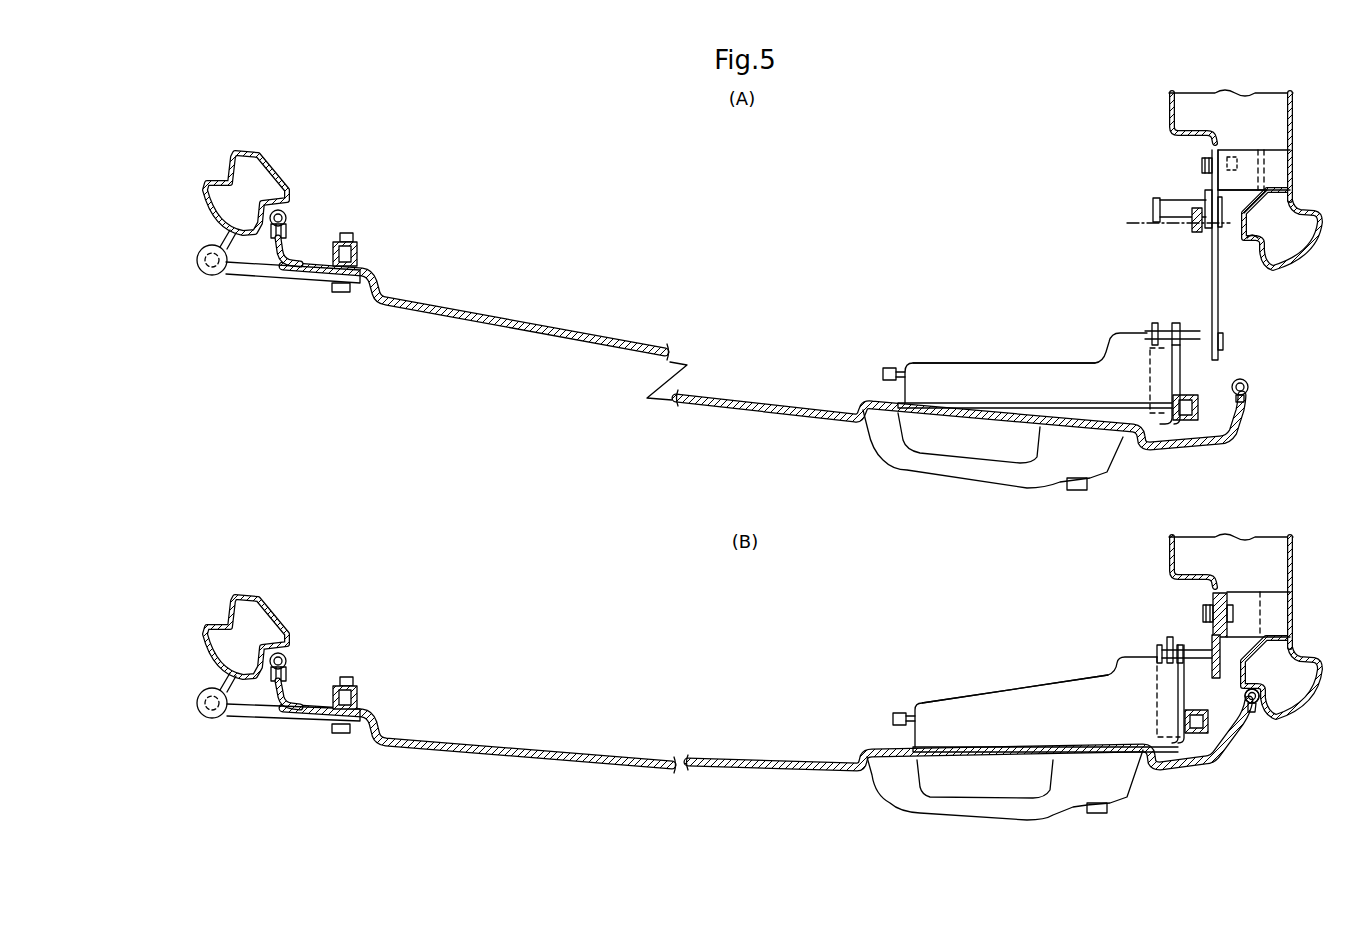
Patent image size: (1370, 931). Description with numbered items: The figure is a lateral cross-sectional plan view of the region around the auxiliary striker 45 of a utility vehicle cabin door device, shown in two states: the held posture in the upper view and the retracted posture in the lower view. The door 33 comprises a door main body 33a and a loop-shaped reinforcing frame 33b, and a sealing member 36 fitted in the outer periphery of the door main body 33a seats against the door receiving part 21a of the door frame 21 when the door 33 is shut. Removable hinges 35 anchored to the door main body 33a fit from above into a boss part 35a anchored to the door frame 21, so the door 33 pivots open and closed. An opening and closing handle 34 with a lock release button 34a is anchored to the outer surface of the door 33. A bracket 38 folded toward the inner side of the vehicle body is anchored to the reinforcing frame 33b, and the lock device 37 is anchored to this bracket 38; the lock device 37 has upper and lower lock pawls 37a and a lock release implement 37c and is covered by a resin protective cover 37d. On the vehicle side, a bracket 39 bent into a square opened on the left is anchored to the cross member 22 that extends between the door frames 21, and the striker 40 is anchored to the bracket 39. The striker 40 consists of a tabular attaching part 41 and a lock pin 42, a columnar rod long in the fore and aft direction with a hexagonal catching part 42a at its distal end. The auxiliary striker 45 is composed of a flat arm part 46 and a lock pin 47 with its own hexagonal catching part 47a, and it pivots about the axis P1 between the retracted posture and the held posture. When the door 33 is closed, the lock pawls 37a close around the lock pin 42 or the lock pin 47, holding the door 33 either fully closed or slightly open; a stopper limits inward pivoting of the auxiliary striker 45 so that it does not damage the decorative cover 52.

The door frame 21 is at (252, 153).
The door receiving part 21a is at (288, 219).
The cross member 22 is at (1293, 128).
The door 33 is at (608, 364).
The door main body 33a is at (452, 332).
The reinforcing frame 33b is at (358, 246).
The opening and closing handle 34 is at (910, 470).
The lock release button 34a is at (1090, 485).
The removable hinge 35 is at (322, 284).
The boss part 35a is at (237, 270).
The sealing member 36 is at (298, 266).
The lock device 37 is at (1140, 375).
The lock pawl 37a is at (1163, 322).
The lock release implement 37c is at (884, 370).
The protective cover 37d is at (1018, 363).
The bracket 38 is at (975, 404).
The bracket 39 is at (1248, 150).
The striker 40 is at (1152, 187).
The attaching part 41 is at (1223, 197).
The lock pin 42 is at (1178, 200).
The catching part 42a is at (1152, 210).
The auxiliary striker 45 is at (1230, 351).
The arm part 46 is at (1212, 303).
The lock pin 47 is at (1186, 355).
The catching part 47a is at (1153, 327).
The decorative cover 52 is at (1170, 105).
The axis of the auxiliary striker P1 is at (1142, 228).